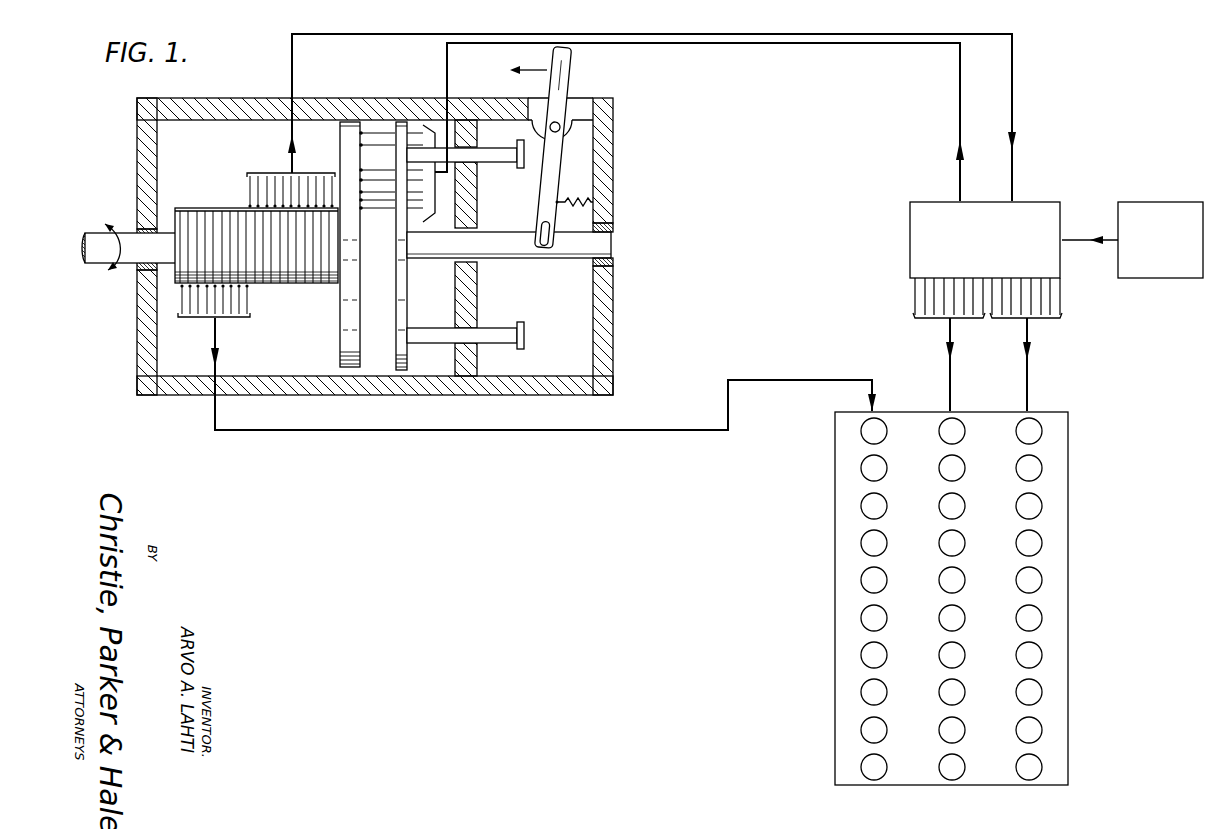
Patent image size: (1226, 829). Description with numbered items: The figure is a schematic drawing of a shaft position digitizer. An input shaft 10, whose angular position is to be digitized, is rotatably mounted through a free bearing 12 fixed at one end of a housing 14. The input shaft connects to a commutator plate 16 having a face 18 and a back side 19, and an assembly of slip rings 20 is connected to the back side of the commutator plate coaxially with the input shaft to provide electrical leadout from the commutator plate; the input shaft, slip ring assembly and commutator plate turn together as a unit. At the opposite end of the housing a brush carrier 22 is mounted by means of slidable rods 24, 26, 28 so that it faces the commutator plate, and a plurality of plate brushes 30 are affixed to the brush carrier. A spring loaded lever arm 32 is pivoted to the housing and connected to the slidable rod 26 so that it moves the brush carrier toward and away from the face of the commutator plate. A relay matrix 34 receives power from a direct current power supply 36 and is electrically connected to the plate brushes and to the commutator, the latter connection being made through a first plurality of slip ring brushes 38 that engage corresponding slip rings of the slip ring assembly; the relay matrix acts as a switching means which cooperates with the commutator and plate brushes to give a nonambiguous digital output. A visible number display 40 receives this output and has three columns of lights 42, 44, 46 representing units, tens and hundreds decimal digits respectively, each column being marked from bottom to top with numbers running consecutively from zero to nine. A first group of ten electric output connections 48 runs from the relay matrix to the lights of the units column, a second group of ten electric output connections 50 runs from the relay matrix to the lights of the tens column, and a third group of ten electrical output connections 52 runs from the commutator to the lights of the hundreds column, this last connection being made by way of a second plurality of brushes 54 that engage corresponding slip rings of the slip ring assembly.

The input shaft 10 is at (98, 240).
The free bearing 12 is at (141, 271).
The housing 14 is at (139, 396).
The commutator plate 16 is at (348, 371).
The face 18 is at (369, 122).
The back side 19 is at (338, 124).
The assembly of slip rings 20 is at (188, 206).
The brush carrier 22 is at (410, 360).
The slidable rod 24 is at (515, 163).
The slidable rod 26 is at (519, 231).
The slidable rod 28 is at (490, 332).
The plate brushes 30 is at (361, 141).
The spring loaded lever arm 32 is at (572, 65).
The relay matrix 34 is at (1057, 202).
The direct current power supply 36 is at (1145, 202).
The slip ring brushes 38 is at (295, 206).
The visible number display 40 is at (845, 431).
The column of lights 42 is at (1054, 431).
The column of lights 44 is at (970, 433).
The column of lights 46 is at (895, 448).
The first group of electric output connections 48 is at (1068, 299).
The second group of electric output connections 50 is at (906, 305).
The third group of electrical output connections 52 is at (176, 308).
The second plurality of brushes 54 is at (200, 290).